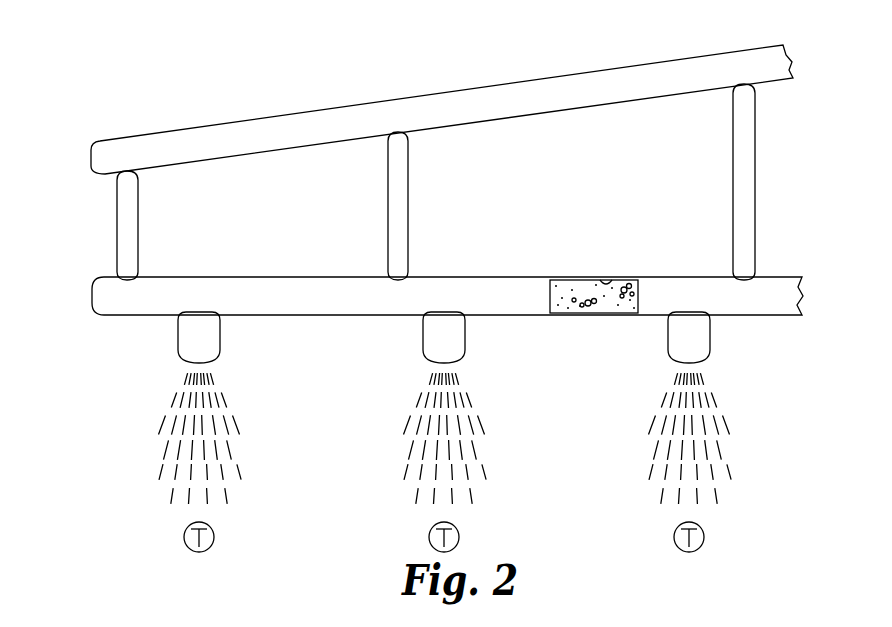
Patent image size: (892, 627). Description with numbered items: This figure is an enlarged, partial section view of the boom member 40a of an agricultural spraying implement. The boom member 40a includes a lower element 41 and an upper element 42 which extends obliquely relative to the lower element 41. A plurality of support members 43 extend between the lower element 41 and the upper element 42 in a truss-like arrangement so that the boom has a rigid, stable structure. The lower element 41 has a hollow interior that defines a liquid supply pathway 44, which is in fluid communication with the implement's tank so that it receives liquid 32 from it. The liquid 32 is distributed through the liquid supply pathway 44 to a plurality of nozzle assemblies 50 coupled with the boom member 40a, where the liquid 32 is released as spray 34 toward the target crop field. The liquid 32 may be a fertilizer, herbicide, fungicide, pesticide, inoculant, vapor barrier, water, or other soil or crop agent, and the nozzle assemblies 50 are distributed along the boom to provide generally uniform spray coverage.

The boom member 40a is at (118, 78).
The upper element 42 is at (314, 108).
The lower element 41 is at (90, 272).
The support members 43 is at (408, 190).
The liquid supply pathway 44 is at (586, 278).
The liquid 32 is at (608, 315).
The nozzle assemblies 50 is at (166, 349).
The spray 34 is at (157, 450).